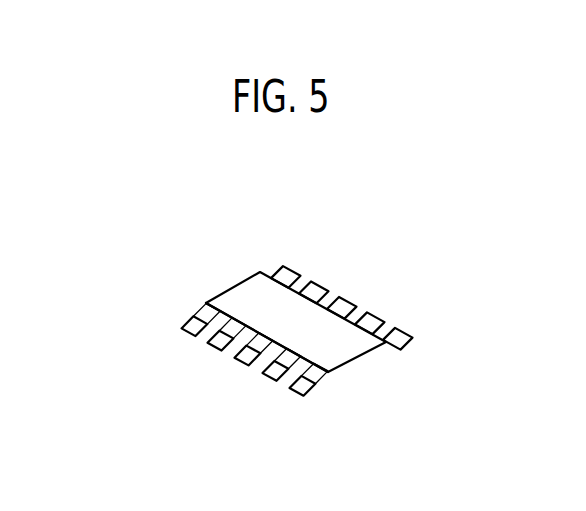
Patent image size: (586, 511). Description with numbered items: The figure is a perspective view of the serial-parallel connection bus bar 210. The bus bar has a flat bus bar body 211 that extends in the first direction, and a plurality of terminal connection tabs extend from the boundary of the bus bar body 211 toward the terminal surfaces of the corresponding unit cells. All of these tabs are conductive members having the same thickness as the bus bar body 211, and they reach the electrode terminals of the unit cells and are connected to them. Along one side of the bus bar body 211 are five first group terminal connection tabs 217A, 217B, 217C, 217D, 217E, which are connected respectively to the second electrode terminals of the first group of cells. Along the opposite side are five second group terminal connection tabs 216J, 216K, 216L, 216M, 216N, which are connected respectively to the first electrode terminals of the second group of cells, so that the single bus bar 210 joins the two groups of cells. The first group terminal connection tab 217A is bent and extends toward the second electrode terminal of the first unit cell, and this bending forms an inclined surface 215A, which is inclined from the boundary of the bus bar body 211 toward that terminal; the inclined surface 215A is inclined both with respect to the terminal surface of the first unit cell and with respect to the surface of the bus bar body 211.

The serial-parallel connection bus bar 210 is at (222, 268).
The bus bar body 211 is at (341, 347).
The inclined surface 215A is at (212, 312).
The second group terminal connection tab 216J is at (288, 272).
The second group terminal connection tab 216K is at (313, 288).
The second group terminal connection tab 216L is at (345, 298).
The second group terminal connection tab 216M is at (378, 312).
The second group terminal connection tab 216N is at (399, 339).
The first group terminal connection tab 217A is at (186, 331).
The first group terminal connection tab 217B is at (214, 346).
The first group terminal connection tab 217C is at (240, 363).
The first group terminal connection tab 217D is at (268, 379).
The first group terminal connection tab 217E is at (297, 392).